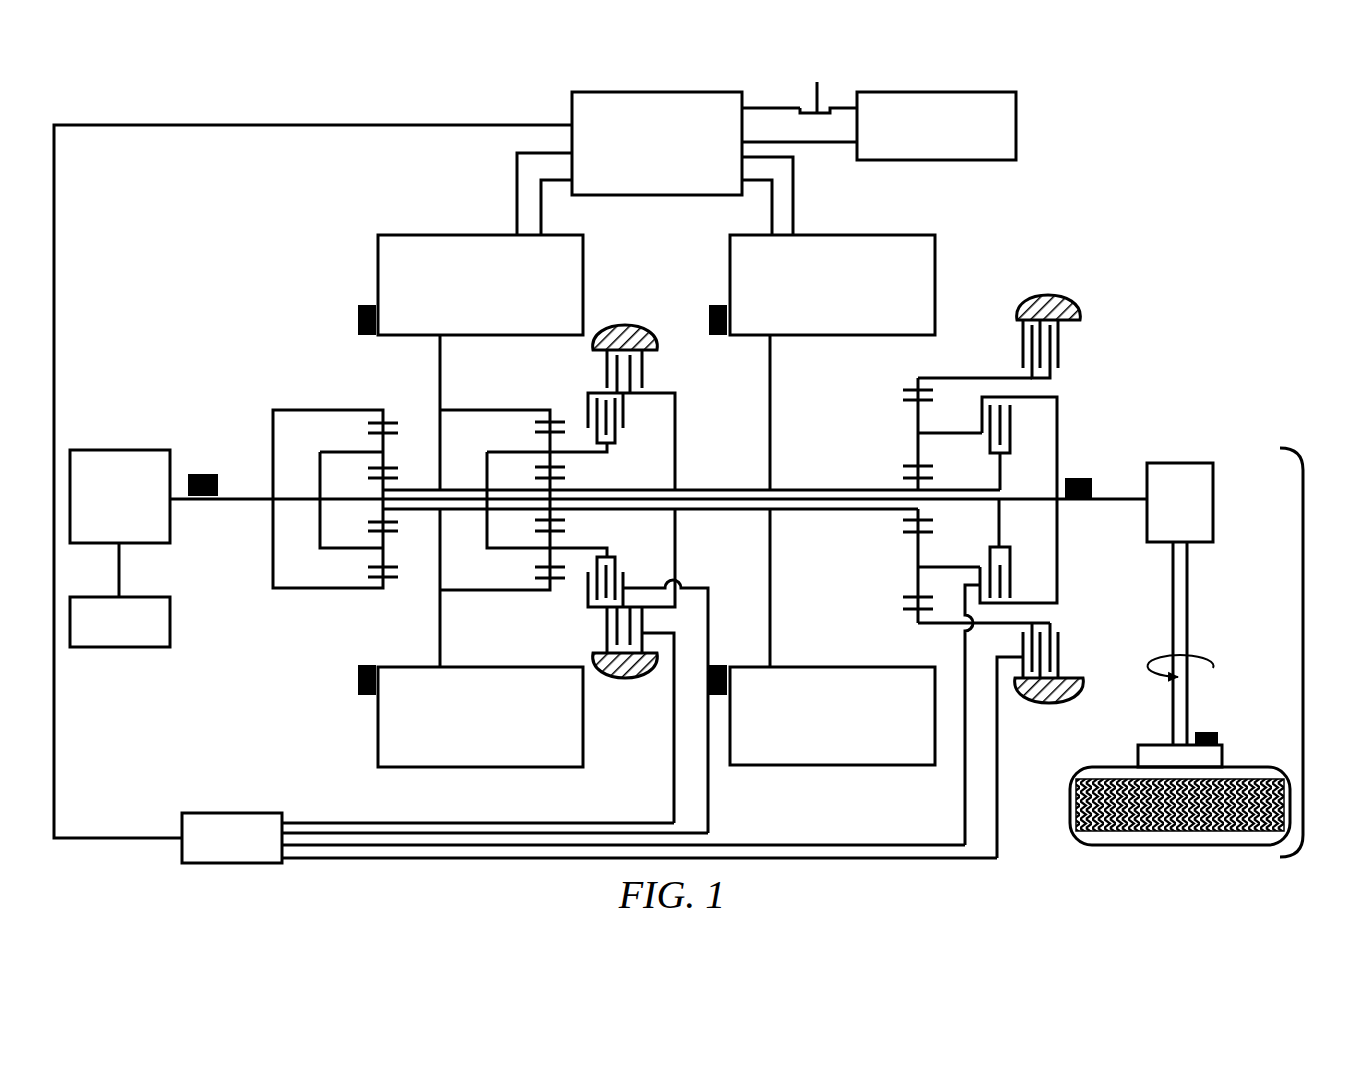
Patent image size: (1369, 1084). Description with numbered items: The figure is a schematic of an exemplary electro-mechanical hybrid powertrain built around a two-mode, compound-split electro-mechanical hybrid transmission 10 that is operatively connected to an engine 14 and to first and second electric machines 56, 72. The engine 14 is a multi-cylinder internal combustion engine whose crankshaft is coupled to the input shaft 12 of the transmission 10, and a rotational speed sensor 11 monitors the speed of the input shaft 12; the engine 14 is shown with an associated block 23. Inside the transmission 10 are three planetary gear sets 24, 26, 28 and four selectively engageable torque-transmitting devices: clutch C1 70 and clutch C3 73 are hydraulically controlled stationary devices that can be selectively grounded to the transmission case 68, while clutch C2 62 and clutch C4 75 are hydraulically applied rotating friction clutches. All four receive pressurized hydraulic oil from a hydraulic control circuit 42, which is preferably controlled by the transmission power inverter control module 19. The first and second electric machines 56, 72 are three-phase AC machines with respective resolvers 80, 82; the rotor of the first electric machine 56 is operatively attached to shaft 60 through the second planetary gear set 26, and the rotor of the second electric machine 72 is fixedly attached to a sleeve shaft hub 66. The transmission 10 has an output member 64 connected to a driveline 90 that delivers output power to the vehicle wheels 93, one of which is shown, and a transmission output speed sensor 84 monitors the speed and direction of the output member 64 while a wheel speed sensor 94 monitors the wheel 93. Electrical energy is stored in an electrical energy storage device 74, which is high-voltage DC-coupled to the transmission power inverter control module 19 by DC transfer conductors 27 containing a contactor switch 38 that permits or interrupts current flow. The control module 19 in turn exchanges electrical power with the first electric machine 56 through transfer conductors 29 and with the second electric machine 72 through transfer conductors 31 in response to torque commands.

The electro-mechanical hybrid transmission 10 is at (342, 208).
The rotational speed sensor 11 is at (203, 471).
The input shaft 12 is at (248, 493).
The engine 14 is at (120, 523).
The transmission power inverter control module 19 is at (657, 143).
The engine control module 23 is at (120, 622).
The first planetary gear set 24 is at (372, 396).
The second planetary gear set 26 is at (542, 396).
The DC transfer conductors 27 is at (758, 107).
The third planetary gear set 28 is at (908, 376).
The transfer conductors 29 is at (516, 188).
The transfer conductors 31 is at (795, 190).
The contactor switch 38 is at (823, 104).
The hydraulic control circuit 42 is at (589, 838).
The first electric machine 56 is at (480, 501).
The shaft 60 is at (972, 496).
The clutch C2 62 is at (1022, 437).
The output member 64 is at (1115, 496).
The sleeve shaft hub 66 is at (808, 488).
The transmission case 68 is at (628, 323).
The clutch C1 70 is at (1005, 336).
The second electric machine 72 is at (937, 250).
The clutch C3 73 is at (654, 367).
The electrical energy storage device 74 is at (936, 126).
The clutch C4 75 is at (632, 426).
The resolver 80 is at (358, 318).
The resolver 82 is at (720, 303).
The transmission output speed sensor 84 is at (1078, 476).
The driveline 90 is at (1303, 647).
The vehicle wheel 93 is at (1138, 755).
The wheel speed sensor 94 is at (1208, 730).